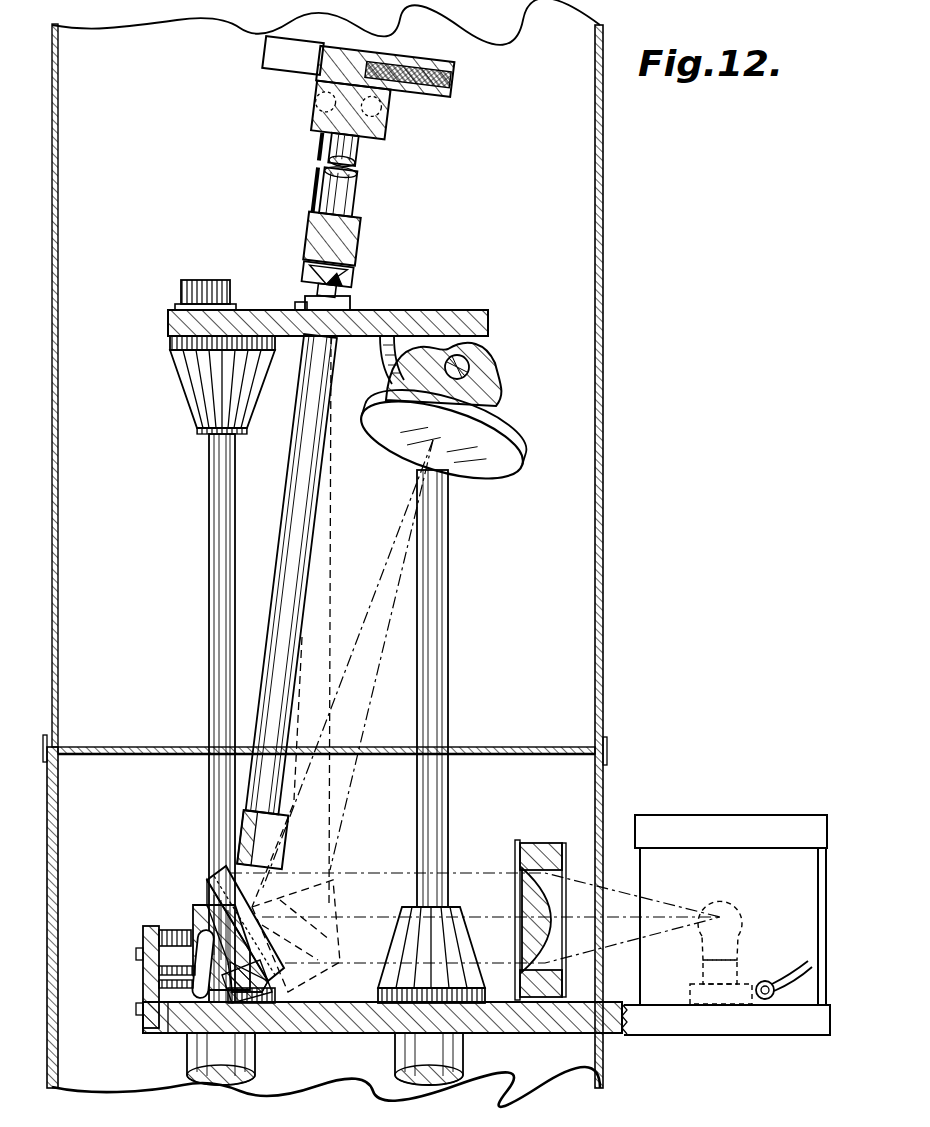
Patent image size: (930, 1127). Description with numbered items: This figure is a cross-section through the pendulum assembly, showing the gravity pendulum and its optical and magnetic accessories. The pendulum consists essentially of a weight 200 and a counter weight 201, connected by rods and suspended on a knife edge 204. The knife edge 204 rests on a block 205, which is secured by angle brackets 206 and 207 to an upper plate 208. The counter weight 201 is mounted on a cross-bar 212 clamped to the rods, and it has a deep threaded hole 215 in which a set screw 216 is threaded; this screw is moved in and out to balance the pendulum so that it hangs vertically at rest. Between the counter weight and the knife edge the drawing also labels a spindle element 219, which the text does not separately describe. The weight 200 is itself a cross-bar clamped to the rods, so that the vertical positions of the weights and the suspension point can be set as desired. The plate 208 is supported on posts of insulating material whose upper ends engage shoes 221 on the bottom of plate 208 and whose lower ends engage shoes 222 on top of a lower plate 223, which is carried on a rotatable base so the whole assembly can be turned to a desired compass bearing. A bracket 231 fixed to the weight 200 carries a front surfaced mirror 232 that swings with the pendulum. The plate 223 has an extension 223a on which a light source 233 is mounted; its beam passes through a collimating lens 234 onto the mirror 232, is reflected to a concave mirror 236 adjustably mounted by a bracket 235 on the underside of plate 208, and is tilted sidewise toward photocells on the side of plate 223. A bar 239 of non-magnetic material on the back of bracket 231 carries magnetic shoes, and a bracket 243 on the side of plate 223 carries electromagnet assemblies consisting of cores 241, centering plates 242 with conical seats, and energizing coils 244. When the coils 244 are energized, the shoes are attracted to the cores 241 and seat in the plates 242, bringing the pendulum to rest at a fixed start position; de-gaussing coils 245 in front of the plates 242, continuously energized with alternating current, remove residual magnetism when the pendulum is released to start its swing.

The weight 200 is at (256, 834).
The counter weight 201 is at (300, 60).
The knife edge 204 is at (342, 262).
The block 205 is at (346, 290).
The angle bracket 206 is at (300, 302).
The angle bracket 207 is at (350, 300).
The plate 208 is at (450, 311).
The cross-bar 212 is at (316, 124).
The deep threaded hole 215 is at (455, 76).
The set screw 216 is at (405, 72).
The spindle 219 is at (315, 182).
The shoe 221 is at (200, 381).
The shoe 222 is at (468, 955).
The plate 223 is at (575, 1008).
The extension 223a is at (742, 1020).
The bracket 231 is at (236, 864).
The front surfaced mirror 232 is at (325, 918).
The light source 233 is at (746, 912).
The collimating lens 234 is at (515, 880).
The bracket 235 is at (490, 412).
The concave mirror 236 is at (487, 465).
The bar 239 is at (192, 1005).
The core 241 is at (172, 972).
The centering plate 242 is at (180, 985).
The bracket 243 is at (150, 928).
The energizing coil 244 is at (150, 940).
The de-gaussing coil 245 is at (158, 1028).